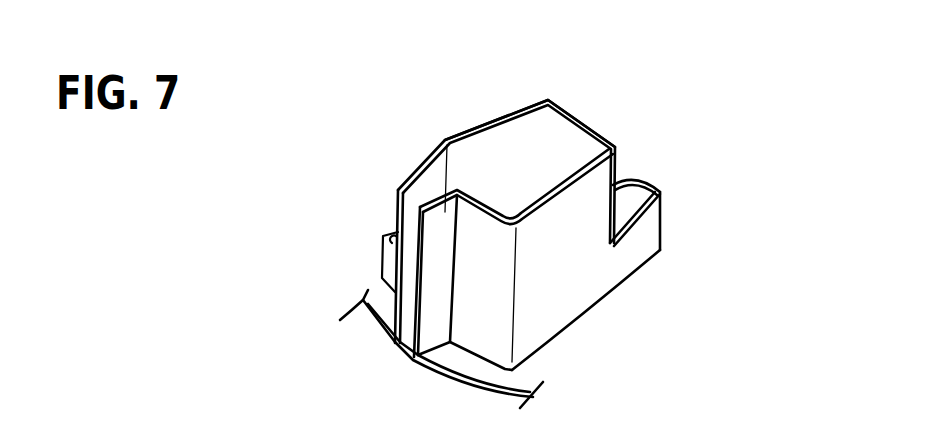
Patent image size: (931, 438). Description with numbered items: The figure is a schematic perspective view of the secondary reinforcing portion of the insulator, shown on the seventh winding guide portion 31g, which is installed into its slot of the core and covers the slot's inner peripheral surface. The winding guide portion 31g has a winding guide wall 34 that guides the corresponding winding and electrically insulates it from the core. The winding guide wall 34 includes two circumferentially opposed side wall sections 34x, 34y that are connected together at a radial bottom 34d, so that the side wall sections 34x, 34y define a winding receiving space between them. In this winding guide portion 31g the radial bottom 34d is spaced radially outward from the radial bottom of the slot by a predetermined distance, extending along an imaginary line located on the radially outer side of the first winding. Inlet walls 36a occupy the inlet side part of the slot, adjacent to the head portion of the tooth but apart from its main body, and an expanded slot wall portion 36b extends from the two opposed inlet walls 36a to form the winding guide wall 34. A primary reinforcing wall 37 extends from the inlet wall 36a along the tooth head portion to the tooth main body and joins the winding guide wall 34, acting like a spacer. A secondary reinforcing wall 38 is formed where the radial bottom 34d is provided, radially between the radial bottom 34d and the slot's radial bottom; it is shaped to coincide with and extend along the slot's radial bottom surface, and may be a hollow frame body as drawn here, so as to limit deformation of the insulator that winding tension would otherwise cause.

The winding guide wall 34 is at (531, 110).
The side wall section 34y is at (483, 124).
The radial bottom 34d is at (585, 123).
The side wall section 34x is at (560, 310).
The inlet wall 36a is at (420, 205).
The expanded slot wall portion 36b is at (556, 284).
The primary reinforcing wall 37 is at (383, 257).
The secondary reinforcing wall 38 is at (660, 190).
The seventh winding guide portion 31g is at (622, 265).